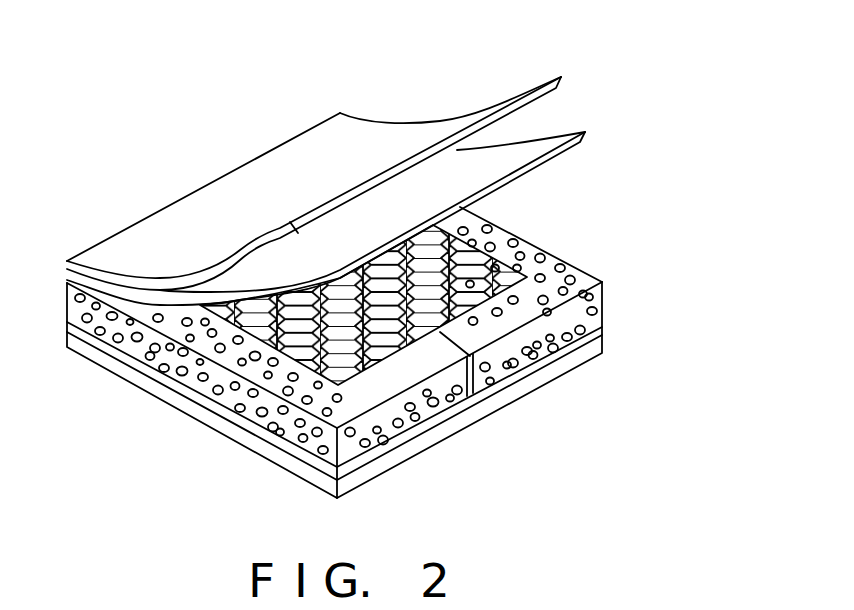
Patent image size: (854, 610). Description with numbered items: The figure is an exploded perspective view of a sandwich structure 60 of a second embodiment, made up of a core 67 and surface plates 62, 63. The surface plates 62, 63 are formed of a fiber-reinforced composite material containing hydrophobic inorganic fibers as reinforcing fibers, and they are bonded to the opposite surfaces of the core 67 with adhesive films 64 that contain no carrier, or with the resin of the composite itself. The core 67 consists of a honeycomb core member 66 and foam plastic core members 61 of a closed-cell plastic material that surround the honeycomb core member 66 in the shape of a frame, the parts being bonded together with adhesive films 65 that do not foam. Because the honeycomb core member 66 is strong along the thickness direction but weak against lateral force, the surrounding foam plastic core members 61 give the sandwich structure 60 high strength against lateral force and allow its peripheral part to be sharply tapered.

The sandwich structure 60 is at (150, 148).
The foam plastic core members 61 is at (493, 369).
The surface plate 62 is at (248, 441).
The surface plate 63 is at (561, 78).
The adhesive films 64 is at (574, 146).
The adhesive films 65 is at (444, 350).
The honeycomb core member 66 is at (512, 318).
The core 67 is at (528, 466).